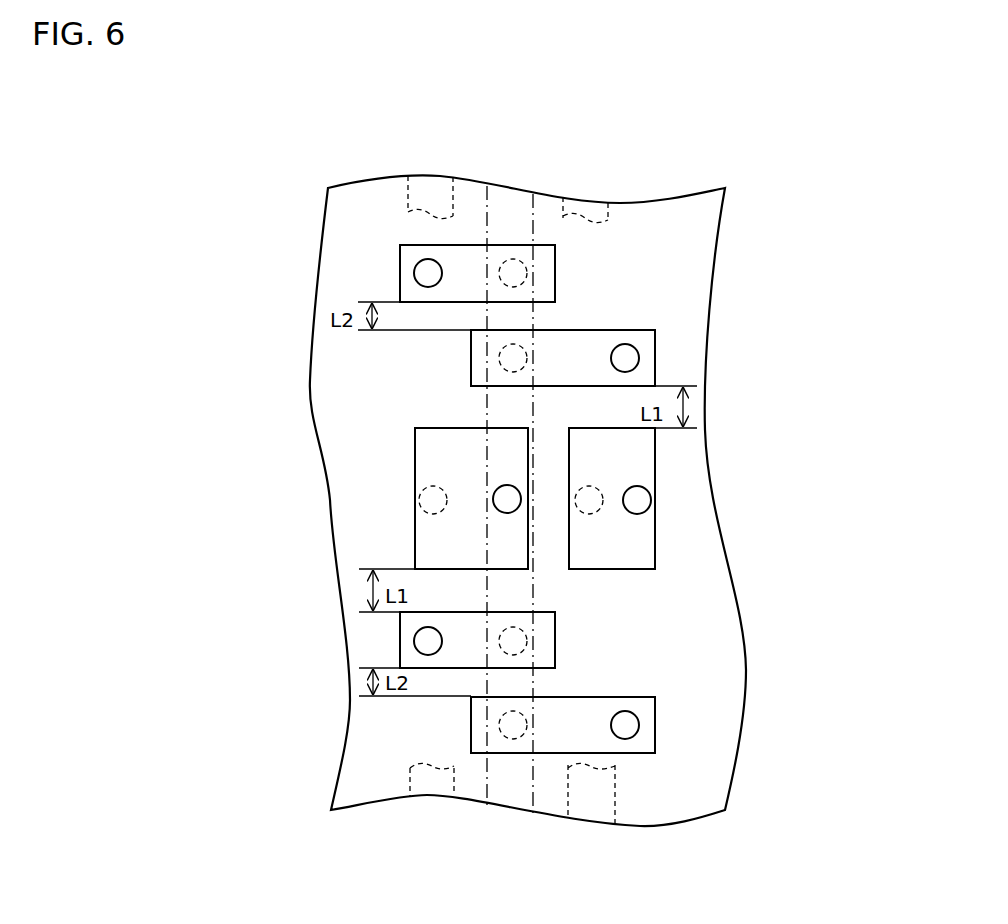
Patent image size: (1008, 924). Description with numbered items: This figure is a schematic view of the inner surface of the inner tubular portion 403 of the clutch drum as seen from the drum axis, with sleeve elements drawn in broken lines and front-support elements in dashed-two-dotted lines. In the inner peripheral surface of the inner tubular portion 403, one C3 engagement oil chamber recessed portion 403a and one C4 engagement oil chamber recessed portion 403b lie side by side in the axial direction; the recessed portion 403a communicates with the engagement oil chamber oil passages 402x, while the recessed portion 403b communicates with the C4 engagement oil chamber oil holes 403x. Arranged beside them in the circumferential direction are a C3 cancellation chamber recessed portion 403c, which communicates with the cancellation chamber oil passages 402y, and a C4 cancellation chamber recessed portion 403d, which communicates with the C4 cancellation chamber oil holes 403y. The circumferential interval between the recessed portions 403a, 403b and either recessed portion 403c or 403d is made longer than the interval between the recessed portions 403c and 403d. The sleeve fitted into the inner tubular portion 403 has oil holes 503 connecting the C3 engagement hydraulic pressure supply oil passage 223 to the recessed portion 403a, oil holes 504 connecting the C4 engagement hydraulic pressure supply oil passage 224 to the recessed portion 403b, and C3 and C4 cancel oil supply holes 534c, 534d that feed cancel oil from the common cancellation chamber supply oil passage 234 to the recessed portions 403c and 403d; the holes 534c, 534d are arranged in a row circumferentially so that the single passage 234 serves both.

The inner tubular portion 403 is at (725, 233).
The C3 engagement oil chamber recessed portion 403a is at (640, 538).
The C4 engagement oil chamber recessed portion 403b is at (428, 542).
The C3 cancellation chamber recessed portion 403c is at (572, 347).
The C4 cancellation chamber recessed portion 403d is at (547, 272).
The C4 engagement oil chamber oil hole 403x is at (507, 499).
The C4 cancellation chamber oil hole 403y is at (428, 273).
The engagement oil chamber oil passage 402x is at (637, 500).
The cancellation chamber oil passage 402y is at (625, 358).
The oil hole 503 is at (589, 500).
The oil hole 504 is at (433, 500).
The C3 cancel oil supply hole 534c is at (513, 358).
The C4 cancel oil supply hole 534d is at (513, 273).
The cancellation chamber supply oil passage 234 is at (503, 215).
The C4 engagement hydraulic pressure supply oil passage 224 is at (430, 783).
The C3 engagement hydraulic pressure supply oil passage 223 is at (597, 787).